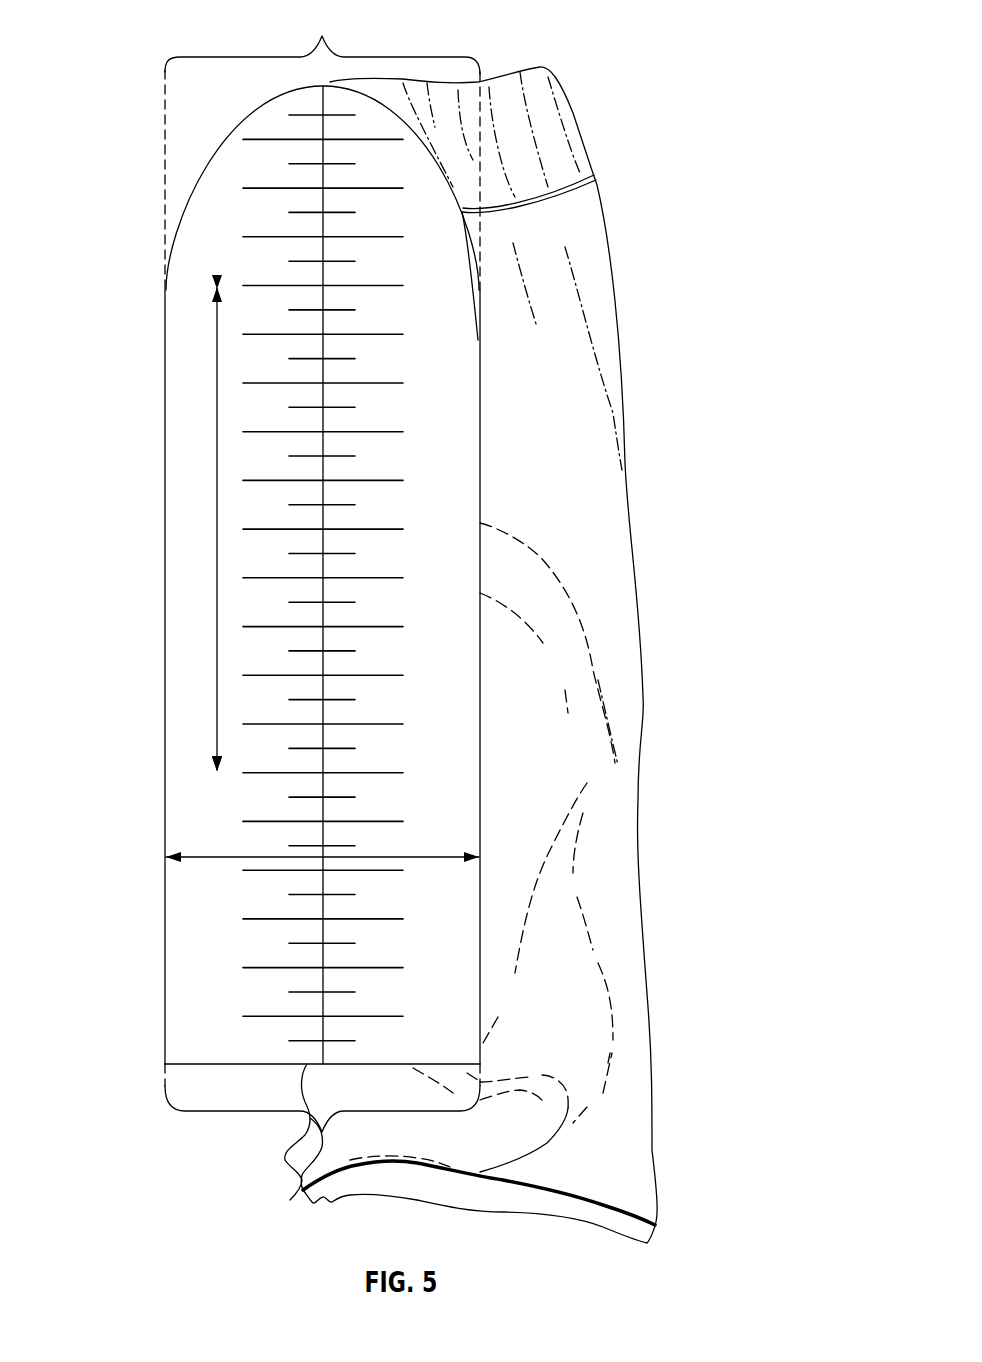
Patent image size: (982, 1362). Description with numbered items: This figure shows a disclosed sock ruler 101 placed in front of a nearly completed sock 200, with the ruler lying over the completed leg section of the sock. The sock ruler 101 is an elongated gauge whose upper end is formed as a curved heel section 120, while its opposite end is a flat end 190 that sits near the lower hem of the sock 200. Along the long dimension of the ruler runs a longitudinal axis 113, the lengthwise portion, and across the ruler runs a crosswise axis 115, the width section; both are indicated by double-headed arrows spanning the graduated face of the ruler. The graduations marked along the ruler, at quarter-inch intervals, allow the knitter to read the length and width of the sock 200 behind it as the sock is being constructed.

The sock ruler 101 is at (126, 249).
The longitudinal axis 113 is at (217, 533).
The crosswise axis 115 is at (193, 855).
The curved heel section 120 is at (322, 39).
The flat end 190 is at (301, 1192).
The sock 200 is at (650, 738).